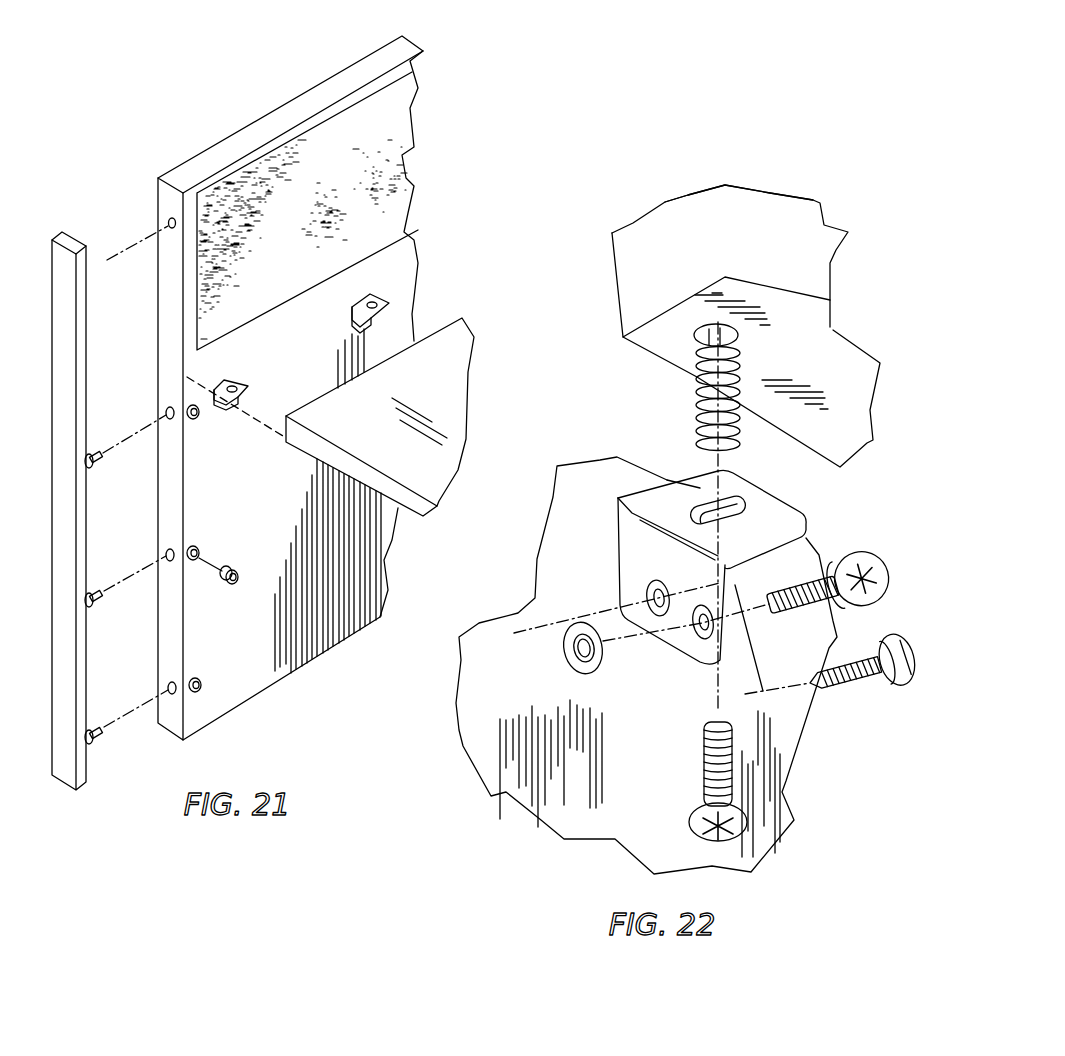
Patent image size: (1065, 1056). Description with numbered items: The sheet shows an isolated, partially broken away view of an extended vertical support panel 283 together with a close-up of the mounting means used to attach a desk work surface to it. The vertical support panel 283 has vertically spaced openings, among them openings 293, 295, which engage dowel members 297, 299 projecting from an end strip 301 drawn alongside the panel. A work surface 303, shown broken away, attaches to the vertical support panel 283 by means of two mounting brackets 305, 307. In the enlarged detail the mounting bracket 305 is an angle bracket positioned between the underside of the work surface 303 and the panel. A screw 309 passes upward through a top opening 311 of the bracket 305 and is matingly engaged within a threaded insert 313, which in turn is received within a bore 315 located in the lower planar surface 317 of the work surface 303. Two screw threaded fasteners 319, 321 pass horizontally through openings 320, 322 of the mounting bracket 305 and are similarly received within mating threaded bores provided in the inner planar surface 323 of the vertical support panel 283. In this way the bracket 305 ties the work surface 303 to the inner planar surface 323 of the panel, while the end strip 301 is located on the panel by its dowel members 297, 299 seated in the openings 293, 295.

In FIG. 21, the vertical support panel 283 is at (303, 104).
In FIG. 21, the opening 293 is at (177, 546).
In FIG. 21, the opening 295 is at (170, 692).
In FIG. 21, the dowel member 297 is at (92, 590).
In FIG. 21, the dowel member 299 is at (95, 727).
In FIG. 21, the end strip 301 is at (72, 378).
In FIG. 21, the work surface 303 is at (449, 359).
In FIG. 22, the work surface 303 is at (780, 193).
In FIG. 21, the mounting bracket 305 is at (233, 378).
In FIG. 22, the mounting bracket 305 is at (623, 551).
In FIG. 21, the mounting bracket 307 is at (377, 298).
In FIG. 22, the screw 309 is at (689, 833).
In FIG. 22, the top opening 311 is at (736, 516).
In FIG. 22, the threaded insert 313 is at (697, 408).
In FIG. 22, the bore 315 is at (700, 343).
In FIG. 22, the lower planar surface 317 is at (820, 337).
In FIG. 22, the screw threaded fastener 319 is at (872, 567).
In FIG. 22, the opening 320 is at (648, 588).
In FIG. 22, the screw threaded fastener 321 is at (893, 680).
In FIG. 22, the opening 322 is at (697, 645).
In FIG. 21, the inner planar surface 323 is at (243, 648).
In FIG. 22, the inner planar surface 323 is at (551, 792).